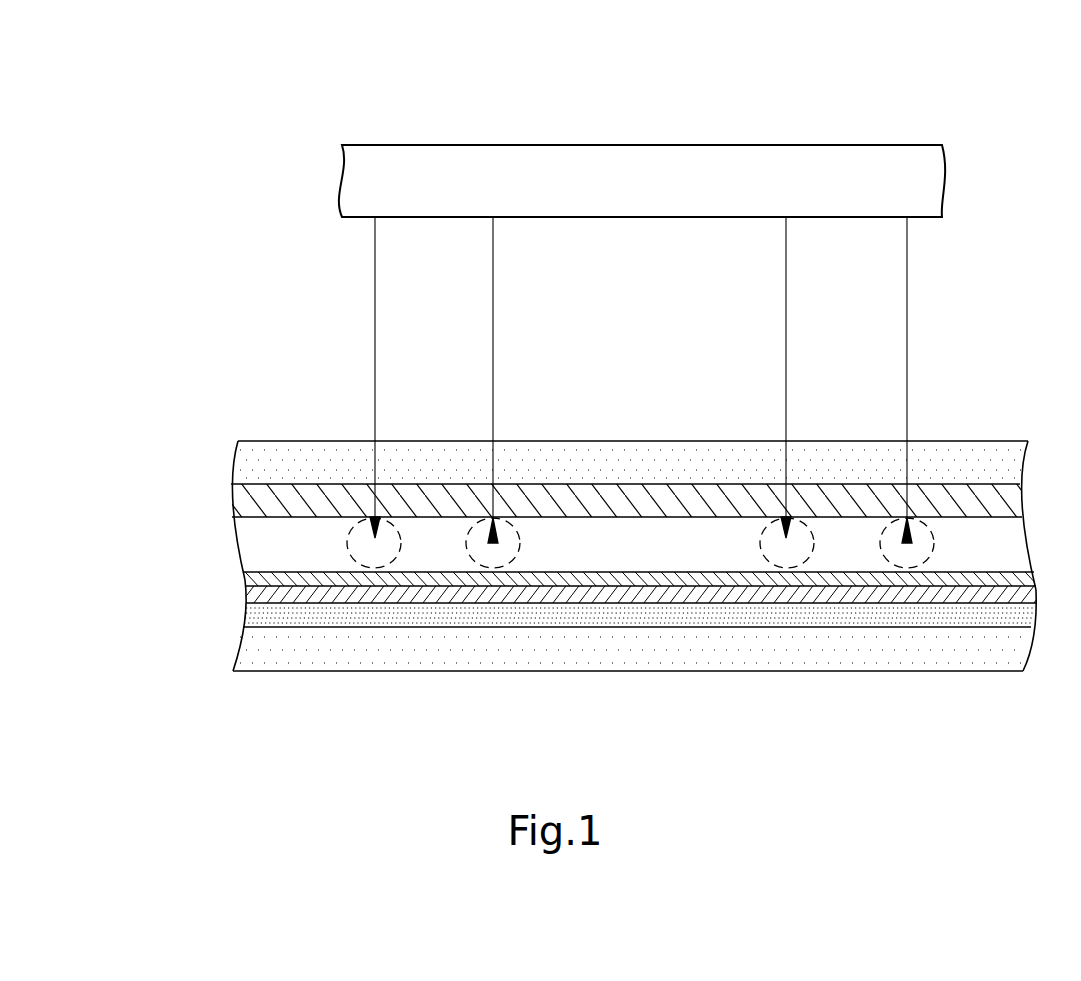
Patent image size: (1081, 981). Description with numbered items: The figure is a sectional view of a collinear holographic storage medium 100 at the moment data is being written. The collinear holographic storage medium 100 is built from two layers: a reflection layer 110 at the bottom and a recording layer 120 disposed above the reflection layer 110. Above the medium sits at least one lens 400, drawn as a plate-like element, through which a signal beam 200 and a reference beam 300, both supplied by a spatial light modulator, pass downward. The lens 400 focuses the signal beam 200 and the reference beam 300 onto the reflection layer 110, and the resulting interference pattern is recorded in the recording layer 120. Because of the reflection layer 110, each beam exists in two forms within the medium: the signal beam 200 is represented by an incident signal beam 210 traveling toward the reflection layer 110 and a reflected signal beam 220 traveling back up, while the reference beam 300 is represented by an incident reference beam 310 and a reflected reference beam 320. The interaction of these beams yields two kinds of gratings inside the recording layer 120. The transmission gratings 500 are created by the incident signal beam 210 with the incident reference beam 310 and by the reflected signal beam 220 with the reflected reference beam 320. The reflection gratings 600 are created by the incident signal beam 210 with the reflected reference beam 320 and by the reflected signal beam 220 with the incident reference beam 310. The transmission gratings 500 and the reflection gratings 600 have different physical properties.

The collinear holographic storage medium 100 is at (532, 556).
The reflection layer 110 is at (248, 612).
The recording layer 120 is at (247, 547).
The signal beam 200 is at (450, 290).
The incident signal beam 210 is at (375, 252).
The reflected signal beam 220 is at (493, 252).
The reference beam 300 is at (862, 290).
The incident reference beam 310 is at (786, 252).
The reflected reference beam 320 is at (907, 252).
The lens 400 is at (357, 181).
The transmission gratings 500 is at (787, 542).
The reflection gratings 600 is at (890, 527).